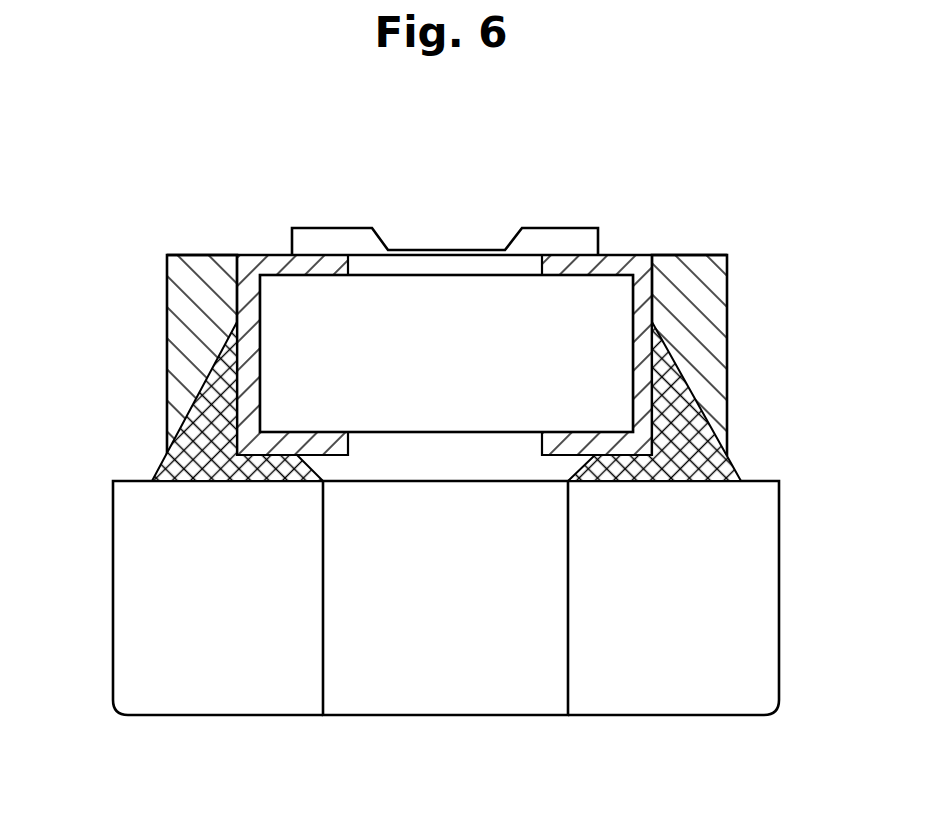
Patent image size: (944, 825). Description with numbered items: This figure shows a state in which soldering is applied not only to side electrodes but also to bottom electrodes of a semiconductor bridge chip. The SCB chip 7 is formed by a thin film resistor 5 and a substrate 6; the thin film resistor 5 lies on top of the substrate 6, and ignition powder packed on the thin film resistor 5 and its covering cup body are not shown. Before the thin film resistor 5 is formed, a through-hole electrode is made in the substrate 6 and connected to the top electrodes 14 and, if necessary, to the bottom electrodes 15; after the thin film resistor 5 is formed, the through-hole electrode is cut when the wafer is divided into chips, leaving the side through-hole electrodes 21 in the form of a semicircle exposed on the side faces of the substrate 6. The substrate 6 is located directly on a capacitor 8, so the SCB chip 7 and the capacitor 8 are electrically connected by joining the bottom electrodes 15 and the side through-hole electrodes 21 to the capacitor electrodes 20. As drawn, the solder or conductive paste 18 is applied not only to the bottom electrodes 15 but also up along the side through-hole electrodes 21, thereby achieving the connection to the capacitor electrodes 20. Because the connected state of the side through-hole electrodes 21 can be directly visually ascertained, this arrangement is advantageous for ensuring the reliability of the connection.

The thin film resistor 5 is at (445, 258).
The substrate 6 is at (490, 325).
The SCB chip 7 is at (455, 448).
The capacitor 8 is at (408, 642).
The top electrodes 14 is at (637, 255).
The bottom electrodes 15 is at (562, 455).
The solder or conductive paste 18 is at (725, 452).
The capacitor electrodes 20 is at (175, 603).
The side through-hole electrodes 21 is at (207, 343).